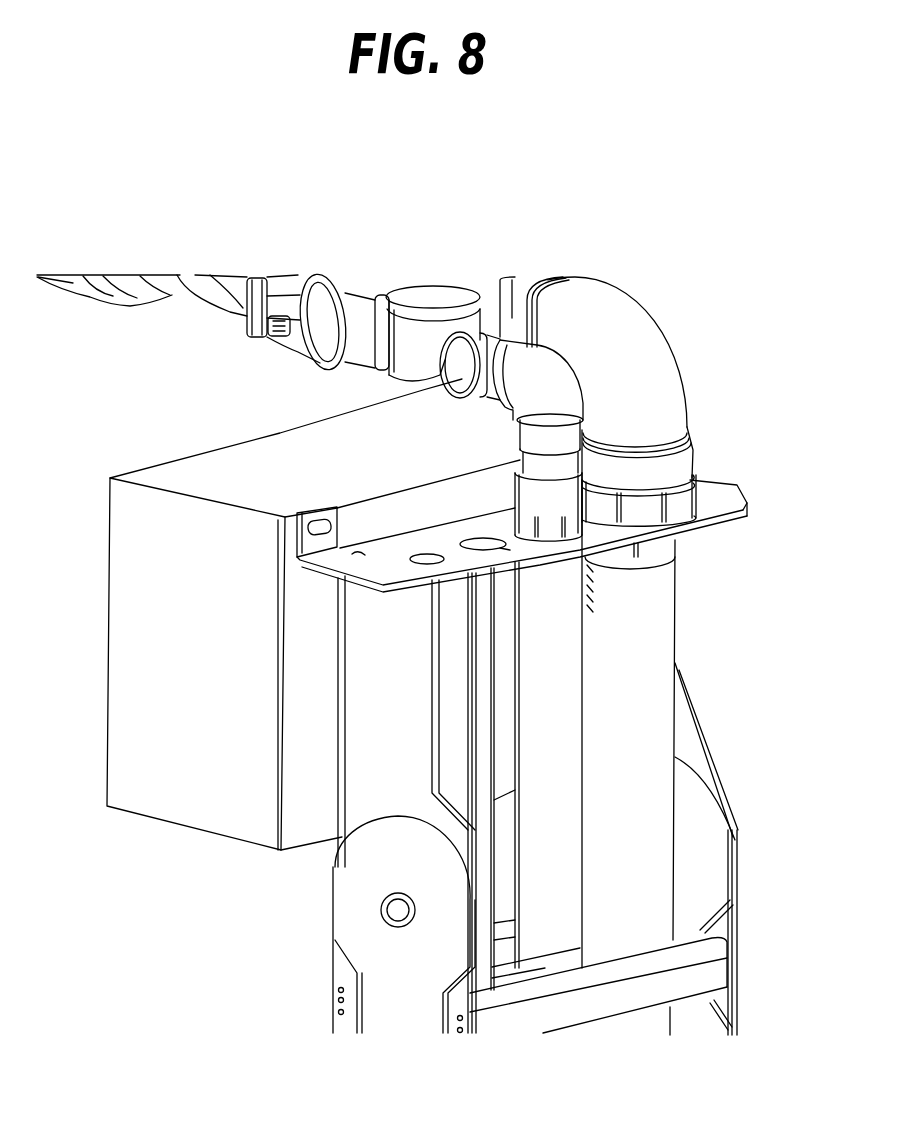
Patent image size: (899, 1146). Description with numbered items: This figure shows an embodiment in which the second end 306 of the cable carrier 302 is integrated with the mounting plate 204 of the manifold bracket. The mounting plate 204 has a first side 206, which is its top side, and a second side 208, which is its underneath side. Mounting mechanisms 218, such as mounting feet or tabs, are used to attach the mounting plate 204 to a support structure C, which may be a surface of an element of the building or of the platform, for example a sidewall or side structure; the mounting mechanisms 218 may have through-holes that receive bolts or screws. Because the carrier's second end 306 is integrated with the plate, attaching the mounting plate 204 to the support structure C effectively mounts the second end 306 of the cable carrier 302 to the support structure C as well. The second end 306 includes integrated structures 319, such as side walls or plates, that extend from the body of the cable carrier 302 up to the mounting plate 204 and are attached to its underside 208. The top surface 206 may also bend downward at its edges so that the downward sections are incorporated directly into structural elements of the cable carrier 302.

The mounting plate 204 is at (393, 553).
The first side 206 is at (406, 568).
The second side 208 is at (358, 598).
The mounting mechanisms 218 is at (317, 507).
The cable carrier 302 is at (297, 933).
The second end 306 is at (310, 882).
The integrated structures 319 is at (370, 615).
The support structure C is at (328, 680).